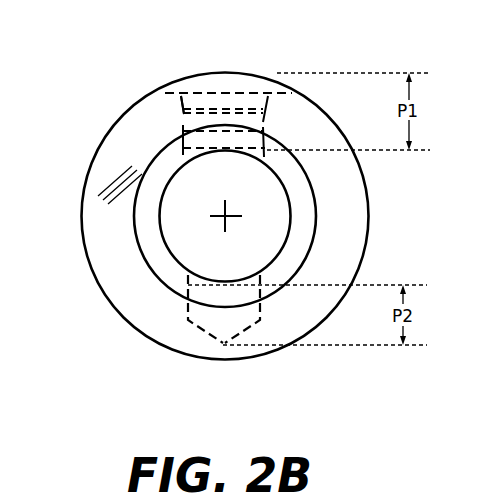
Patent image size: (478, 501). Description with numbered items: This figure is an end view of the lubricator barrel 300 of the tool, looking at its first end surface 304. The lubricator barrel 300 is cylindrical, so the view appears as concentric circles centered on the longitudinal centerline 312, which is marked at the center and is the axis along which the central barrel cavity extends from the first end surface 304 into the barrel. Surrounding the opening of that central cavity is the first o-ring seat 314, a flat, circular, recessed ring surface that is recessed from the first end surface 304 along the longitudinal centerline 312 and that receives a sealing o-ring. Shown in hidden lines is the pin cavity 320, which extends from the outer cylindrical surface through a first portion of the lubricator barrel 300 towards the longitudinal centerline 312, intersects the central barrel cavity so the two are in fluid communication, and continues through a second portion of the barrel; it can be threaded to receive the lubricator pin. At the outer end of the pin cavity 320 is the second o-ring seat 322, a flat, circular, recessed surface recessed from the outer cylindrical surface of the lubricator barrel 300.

The lubricator barrel 300 is at (103, 66).
The first end surface 304 is at (92, 191).
The longitudinal centerline 312 is at (238, 228).
The first o-ring seat 314 is at (321, 239).
The pin cavity 320 is at (233, 74).
The second o-ring seat 322 is at (183, 84).